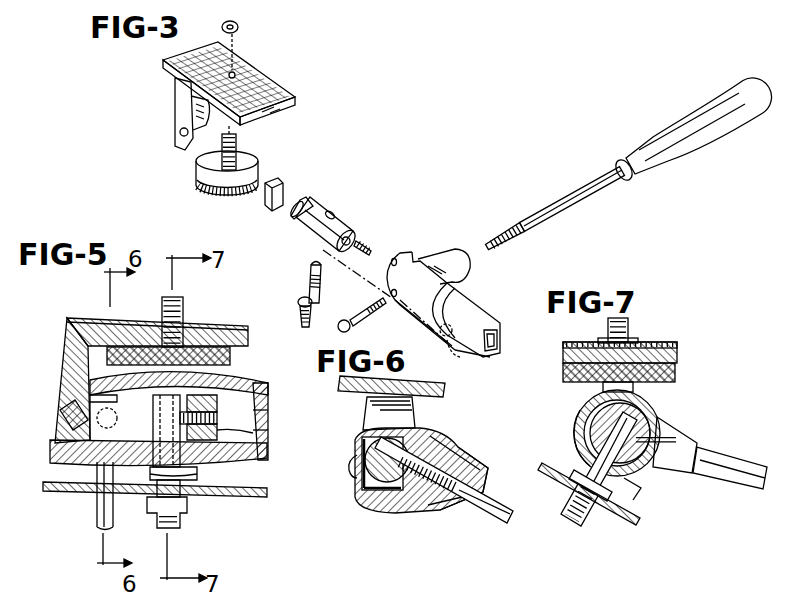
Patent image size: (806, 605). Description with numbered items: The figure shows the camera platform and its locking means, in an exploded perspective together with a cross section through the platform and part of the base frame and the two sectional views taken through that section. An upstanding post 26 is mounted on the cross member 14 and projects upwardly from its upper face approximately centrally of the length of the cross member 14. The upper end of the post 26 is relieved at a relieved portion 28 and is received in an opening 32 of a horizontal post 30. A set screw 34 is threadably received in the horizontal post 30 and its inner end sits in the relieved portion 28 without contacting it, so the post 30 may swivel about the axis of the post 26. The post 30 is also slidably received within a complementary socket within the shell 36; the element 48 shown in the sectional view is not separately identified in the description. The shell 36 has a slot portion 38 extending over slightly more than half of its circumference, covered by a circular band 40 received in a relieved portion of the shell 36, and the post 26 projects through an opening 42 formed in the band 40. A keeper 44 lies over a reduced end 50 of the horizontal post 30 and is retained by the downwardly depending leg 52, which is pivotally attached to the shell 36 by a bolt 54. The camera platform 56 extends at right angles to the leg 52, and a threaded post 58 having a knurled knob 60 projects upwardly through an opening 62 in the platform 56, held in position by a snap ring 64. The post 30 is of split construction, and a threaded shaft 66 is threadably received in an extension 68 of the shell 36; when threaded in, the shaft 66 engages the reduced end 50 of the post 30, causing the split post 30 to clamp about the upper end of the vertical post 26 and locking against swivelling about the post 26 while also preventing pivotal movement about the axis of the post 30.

In FIG. 5, the cross member 14 is at (50, 481).
In FIG. 7, the cross member 14 is at (623, 514).
In FIG. 3, the upstanding post 26 is at (298, 313).
In FIG. 5, the upstanding post 26 is at (160, 528).
In FIG. 7, the upstanding post 26 is at (572, 520).
In FIG. 3, the relieved portion 28 is at (310, 269).
In FIG. 5, the relieved portion 28 is at (153, 410).
In FIG. 7, the relieved portion 28 is at (605, 431).
In FIG. 3, the horizontal post 30 is at (347, 221).
In FIG. 5, the horizontal post 30 is at (222, 430).
In FIG. 6, the horizontal post 30 is at (404, 444).
In FIG. 7, the horizontal post 30 is at (653, 409).
In FIG. 3, the opening 32 is at (332, 211).
In FIG. 3, the set screw 34 is at (373, 240).
In FIG. 5, the set screw 34 is at (262, 420).
In FIG. 3, the shell 36 is at (480, 304).
In FIG. 5, the shell 36 is at (265, 385).
In FIG. 6, the shell 36 is at (372, 504).
In FIG. 7, the shell 36 is at (582, 408).
In FIG. 7, the slot portion 38 is at (631, 483).
In FIG. 3, the circular band 40 is at (470, 278).
In FIG. 5, the circular band 40 is at (200, 473).
In FIG. 7, the circular band 40 is at (574, 451).
In FIG. 3, the opening 42 is at (455, 356).
In FIG. 3, the keeper 44 is at (282, 176).
In FIG. 6, the socket seat 48 is at (360, 447).
In FIG. 3, the reduced end 50 is at (292, 218).
In FIG. 3, the leg 52 is at (174, 97).
In FIG. 5, the leg 52 is at (63, 358).
In FIG. 6, the leg 52 is at (415, 416).
In FIG. 3, the bolt 54 is at (357, 301).
In FIG. 5, the bolt 54 is at (58, 413).
In FIG. 6, the bolt 54 is at (347, 479).
In FIG. 3, the camera platform 56 is at (163, 61).
In FIG. 5, the camera platform 56 is at (123, 330).
In FIG. 6, the camera platform 56 is at (363, 388).
In FIG. 7, the camera platform 56 is at (677, 355).
In FIG. 3, the threaded post 58 is at (238, 143).
In FIG. 5, the threaded post 58 is at (186, 309).
In FIG. 7, the threaded post 58 is at (631, 331).
In FIG. 3, the knurled knob 60 is at (197, 163).
In FIG. 5, the knurled knob 60 is at (232, 357).
In FIG. 7, the knurled knob 60 is at (562, 372).
In FIG. 3, the opening 62 is at (254, 72).
In FIG. 7, the opening 62 is at (565, 347).
In FIG. 3, the snap ring 64 is at (239, 27).
In FIG. 7, the snap ring 64 is at (607, 340).
In FIG. 3, the threaded shaft 66 is at (558, 213).
In FIG. 5, the threaded shaft 66 is at (96, 517).
In FIG. 6, the threaded shaft 66 is at (484, 522).
In FIG. 7, the threaded shaft 66 is at (730, 459).
In FIG. 3, the extension 68 is at (458, 252).
In FIG. 6, the extension 68 is at (434, 464).
In FIG. 7, the extension 68 is at (677, 429).